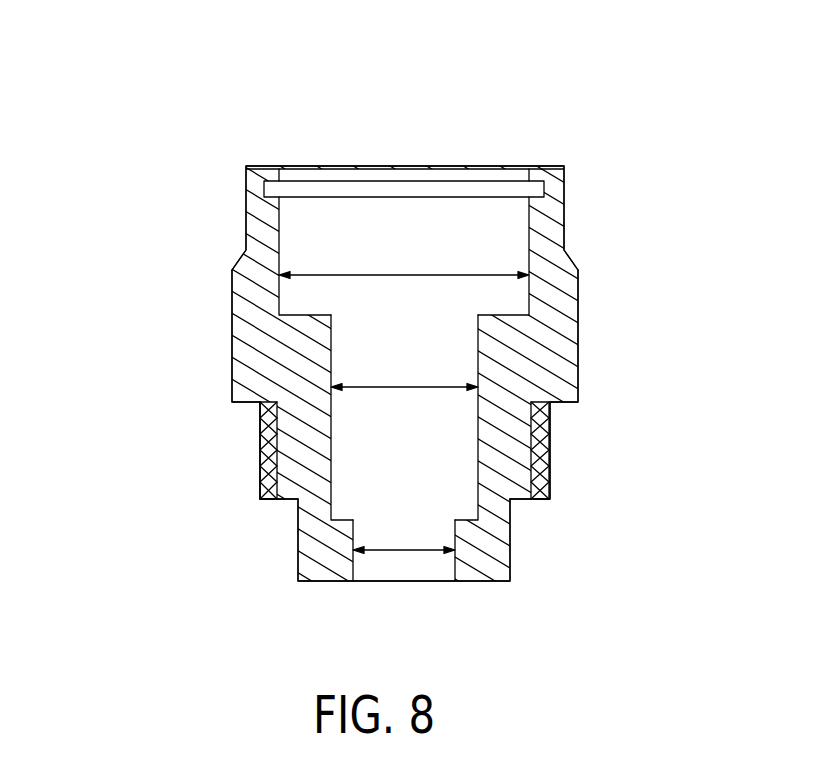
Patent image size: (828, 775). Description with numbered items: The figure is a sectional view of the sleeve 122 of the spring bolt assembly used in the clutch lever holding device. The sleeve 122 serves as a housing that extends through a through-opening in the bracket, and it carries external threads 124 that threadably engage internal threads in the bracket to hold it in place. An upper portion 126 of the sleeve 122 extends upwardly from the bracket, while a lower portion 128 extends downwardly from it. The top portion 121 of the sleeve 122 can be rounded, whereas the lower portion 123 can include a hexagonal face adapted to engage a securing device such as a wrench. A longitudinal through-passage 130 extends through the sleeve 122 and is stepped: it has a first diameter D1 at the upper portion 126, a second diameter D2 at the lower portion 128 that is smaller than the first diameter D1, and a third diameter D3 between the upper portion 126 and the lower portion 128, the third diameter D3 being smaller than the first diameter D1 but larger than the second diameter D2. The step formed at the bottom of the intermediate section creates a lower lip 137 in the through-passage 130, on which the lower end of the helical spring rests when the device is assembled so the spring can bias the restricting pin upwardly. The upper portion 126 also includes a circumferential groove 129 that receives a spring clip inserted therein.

The sleeve 122 is at (175, 91).
The top portion 121 is at (246, 203).
The upper portion 126 is at (246, 236).
The lower portion 123 is at (232, 350).
The external threads 124 is at (260, 464).
The lower portion 128 is at (298, 553).
The circumferential groove 129 is at (267, 192).
The longitudinal through-passage 130 is at (387, 242).
The lower lip 137 is at (343, 519).
The first diameter D1 is at (477, 273).
The third diameter D3 is at (450, 386).
The second diameter D2 is at (415, 551).